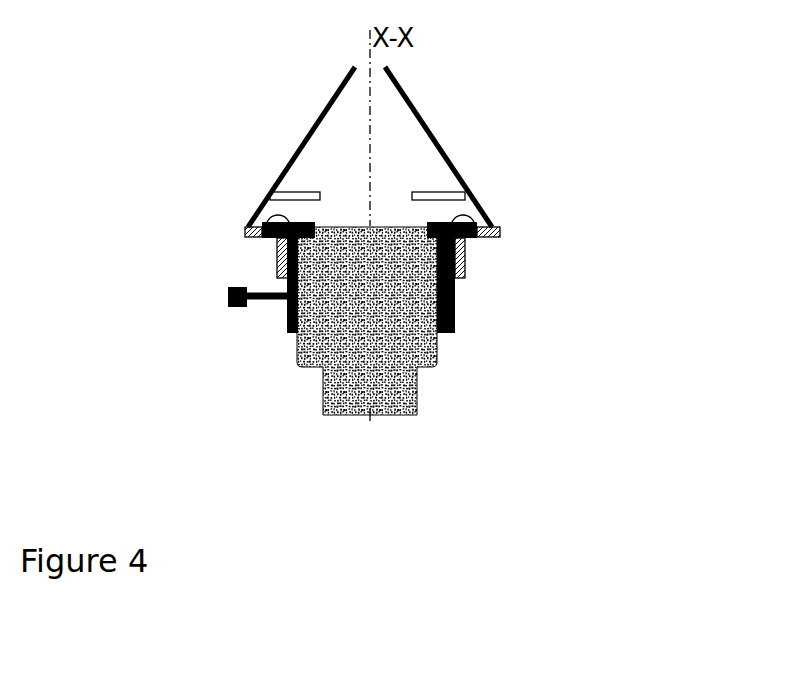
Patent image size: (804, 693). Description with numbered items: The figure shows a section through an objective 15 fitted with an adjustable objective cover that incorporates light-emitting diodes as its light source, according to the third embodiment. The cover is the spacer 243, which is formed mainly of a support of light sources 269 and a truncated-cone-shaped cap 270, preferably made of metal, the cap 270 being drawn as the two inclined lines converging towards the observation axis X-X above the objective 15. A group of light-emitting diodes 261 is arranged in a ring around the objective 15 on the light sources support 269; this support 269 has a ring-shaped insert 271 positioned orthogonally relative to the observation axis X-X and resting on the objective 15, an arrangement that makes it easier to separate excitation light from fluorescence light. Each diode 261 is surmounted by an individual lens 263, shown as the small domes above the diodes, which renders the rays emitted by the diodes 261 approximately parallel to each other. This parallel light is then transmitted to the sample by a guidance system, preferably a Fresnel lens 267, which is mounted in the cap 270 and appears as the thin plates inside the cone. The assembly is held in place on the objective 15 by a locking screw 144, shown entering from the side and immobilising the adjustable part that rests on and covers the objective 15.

The objective 15 is at (390, 265).
The locking screw 144 is at (220, 295).
The spacer 243 is at (442, 98).
The light-emitting diodes 261 is at (497, 222).
The individual lenses 263 is at (247, 225).
The Fresnel lens 267 is at (438, 195).
The support of light sources 269 is at (470, 297).
The truncated-cone-shaped cap 270 is at (300, 137).
The ring-shaped insert 271 is at (243, 235).